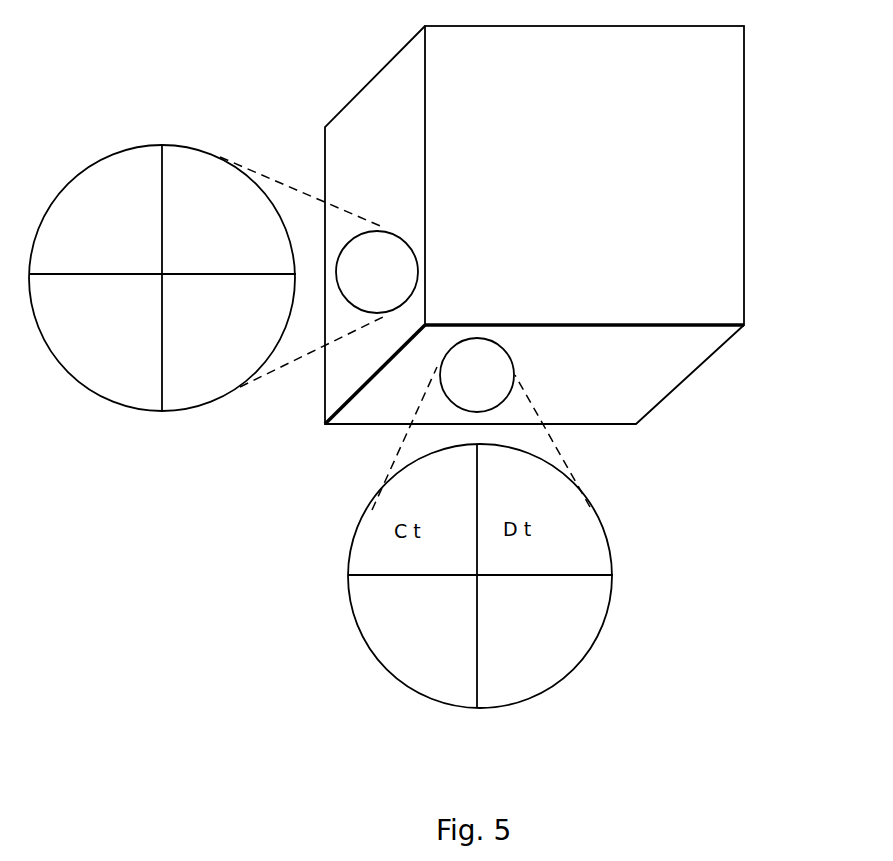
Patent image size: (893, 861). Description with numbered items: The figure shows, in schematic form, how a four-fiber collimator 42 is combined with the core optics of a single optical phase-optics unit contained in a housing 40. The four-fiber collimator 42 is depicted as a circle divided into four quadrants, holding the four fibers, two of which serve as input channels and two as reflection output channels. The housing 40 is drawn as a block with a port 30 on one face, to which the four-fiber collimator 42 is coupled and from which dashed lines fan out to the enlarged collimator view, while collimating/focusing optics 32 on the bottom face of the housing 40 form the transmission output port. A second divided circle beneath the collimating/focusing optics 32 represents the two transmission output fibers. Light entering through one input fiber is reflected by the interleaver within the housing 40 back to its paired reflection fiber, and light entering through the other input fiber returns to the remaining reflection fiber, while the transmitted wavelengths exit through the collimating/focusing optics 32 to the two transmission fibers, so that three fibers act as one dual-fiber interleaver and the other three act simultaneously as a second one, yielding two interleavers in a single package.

The first port (A/B in, C/D out connections) 30 is at (392, 255).
The collimating/focusing optics 32 is at (498, 362).
The housing 40 is at (706, 190).
The four-fiber collimator 42 is at (123, 175).